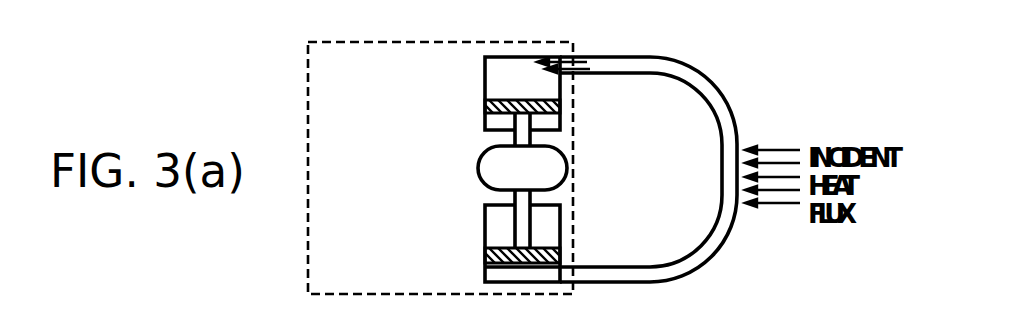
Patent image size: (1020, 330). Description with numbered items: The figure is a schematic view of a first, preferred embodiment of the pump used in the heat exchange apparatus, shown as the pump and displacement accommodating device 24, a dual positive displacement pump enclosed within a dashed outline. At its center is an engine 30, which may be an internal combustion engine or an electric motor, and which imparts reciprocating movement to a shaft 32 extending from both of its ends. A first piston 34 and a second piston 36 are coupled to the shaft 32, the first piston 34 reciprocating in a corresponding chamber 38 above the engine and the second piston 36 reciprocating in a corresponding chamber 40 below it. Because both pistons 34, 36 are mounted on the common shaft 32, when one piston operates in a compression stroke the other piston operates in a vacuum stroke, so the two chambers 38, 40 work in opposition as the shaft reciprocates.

The pump and displacement accommodating device 24 is at (377, 40).
The engine 30 is at (478, 166).
The shaft 32 is at (515, 199).
The first piston 34 is at (547, 100).
The second piston 36 is at (547, 248).
The chamber 38 is at (485, 80).
The chamber 40 is at (485, 233).